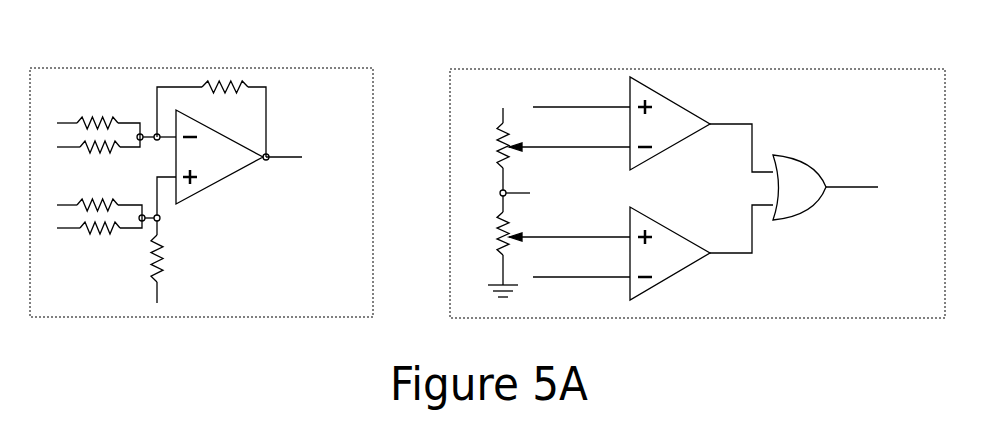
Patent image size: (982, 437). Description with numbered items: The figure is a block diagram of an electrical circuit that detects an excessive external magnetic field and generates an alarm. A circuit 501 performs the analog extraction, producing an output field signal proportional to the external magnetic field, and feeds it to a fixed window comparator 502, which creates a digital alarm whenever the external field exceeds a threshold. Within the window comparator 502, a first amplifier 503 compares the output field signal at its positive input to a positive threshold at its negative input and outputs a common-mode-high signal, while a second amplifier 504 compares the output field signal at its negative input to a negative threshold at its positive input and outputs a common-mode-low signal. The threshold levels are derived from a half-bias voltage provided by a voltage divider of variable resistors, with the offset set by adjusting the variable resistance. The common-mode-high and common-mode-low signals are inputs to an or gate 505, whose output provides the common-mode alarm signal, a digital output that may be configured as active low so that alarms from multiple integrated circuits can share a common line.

The circuit 501 is at (375, 140).
The fixed window comparator 502 is at (450, 243).
The first amplifier 503 is at (656, 93).
The second amplifier 504 is at (648, 220).
The or gate 505 is at (796, 156).